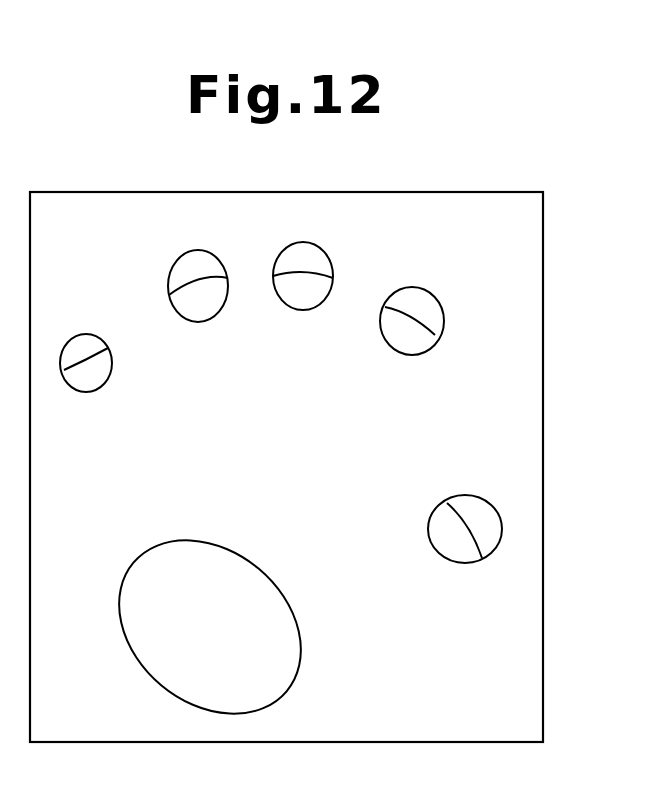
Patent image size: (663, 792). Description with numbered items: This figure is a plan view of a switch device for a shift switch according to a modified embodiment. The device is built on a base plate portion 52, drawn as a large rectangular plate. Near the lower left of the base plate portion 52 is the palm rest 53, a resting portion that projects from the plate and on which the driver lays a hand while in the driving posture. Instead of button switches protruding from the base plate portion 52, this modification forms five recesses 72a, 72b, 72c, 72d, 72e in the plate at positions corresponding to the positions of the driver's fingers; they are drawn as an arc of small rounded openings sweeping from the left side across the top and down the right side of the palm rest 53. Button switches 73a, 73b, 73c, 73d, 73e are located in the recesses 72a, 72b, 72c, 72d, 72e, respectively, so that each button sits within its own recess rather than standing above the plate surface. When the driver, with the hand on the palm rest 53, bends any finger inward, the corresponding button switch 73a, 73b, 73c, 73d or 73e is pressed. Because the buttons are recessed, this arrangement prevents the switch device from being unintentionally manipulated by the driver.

The base plate portion 52 is at (530, 712).
The palm rest 53 is at (137, 617).
The recess 72a is at (474, 500).
The recess 72b is at (437, 306).
The recess 72c is at (316, 251).
The recess 72d is at (190, 257).
The recess 72e is at (73, 341).
The button switch 73a is at (457, 548).
The button switch 73b is at (413, 340).
The button switch 73c is at (305, 297).
The button switch 73d is at (205, 306).
The button switch 73e is at (94, 375).